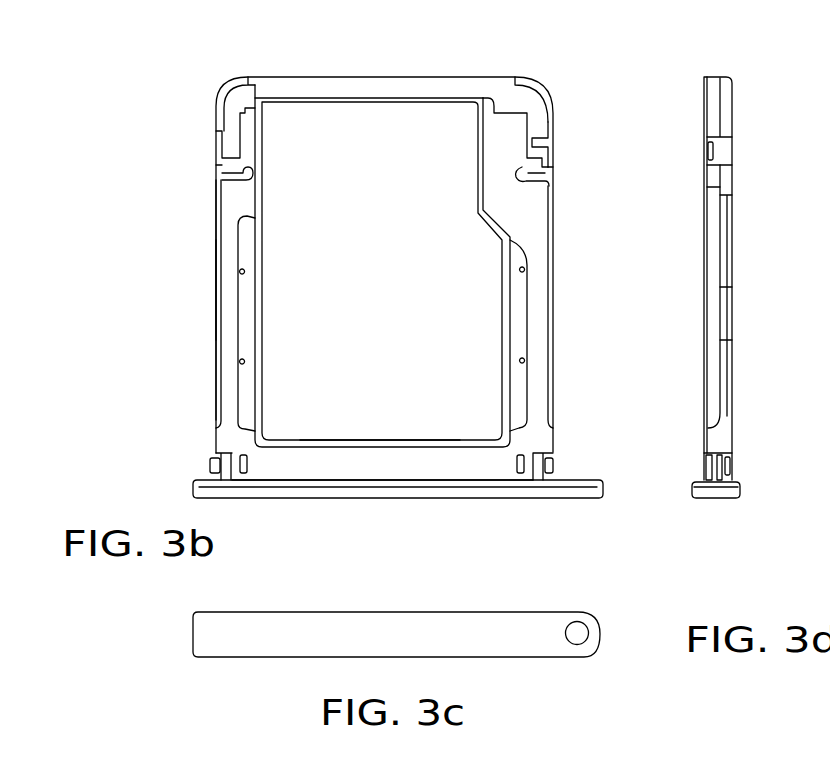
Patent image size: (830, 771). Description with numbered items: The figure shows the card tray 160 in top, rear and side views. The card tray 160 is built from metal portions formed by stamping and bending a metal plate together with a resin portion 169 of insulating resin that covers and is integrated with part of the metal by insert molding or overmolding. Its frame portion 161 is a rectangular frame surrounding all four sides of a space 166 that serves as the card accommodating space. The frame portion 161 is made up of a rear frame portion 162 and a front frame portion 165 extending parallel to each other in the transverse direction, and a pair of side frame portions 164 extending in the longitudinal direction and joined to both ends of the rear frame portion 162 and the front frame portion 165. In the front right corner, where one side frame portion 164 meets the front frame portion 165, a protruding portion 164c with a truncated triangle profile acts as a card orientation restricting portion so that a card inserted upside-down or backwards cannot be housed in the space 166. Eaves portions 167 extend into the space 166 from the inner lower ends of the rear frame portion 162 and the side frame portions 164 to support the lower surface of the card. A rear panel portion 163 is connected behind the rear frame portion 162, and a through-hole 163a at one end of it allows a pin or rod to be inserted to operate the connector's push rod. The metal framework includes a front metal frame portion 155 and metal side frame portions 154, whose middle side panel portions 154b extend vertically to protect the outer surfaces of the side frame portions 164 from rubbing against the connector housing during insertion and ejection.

In FIG. 3b, the card tray 160 is at (515, 74).
In FIG. 3b, the front frame portion 165 is at (291, 78).
In FIG. 3b, the front metal frame portion 155 is at (420, 100).
In FIG. 3b, the metal side frame portions 154 is at (545, 143).
In FIG. 3b, the side frame portions 164 is at (232, 212).
In FIG. 3b, the protruding portion 164c is at (483, 212).
In FIG. 3b, the eaves portions 167 is at (253, 250).
In FIG. 3b, the side panel portions 154b is at (212, 287).
In FIG. 3d, the side panel portions 154b is at (712, 273).
In FIG. 3b, the frame portion 161 is at (214, 455).
In FIG. 3d, the frame portion 161 is at (732, 434).
In FIG. 3b, the resin portion 169 is at (550, 447).
In FIG. 3b, the space 166 is at (353, 420).
In FIG. 3b, the rear frame portion 162 is at (418, 466).
In FIG. 3b, the rear panel portion 163 is at (485, 500).
In FIG. 3c, the rear panel portion 163 is at (407, 636).
In FIG. 3d, the rear panel portion 163 is at (710, 500).
In FIG. 3c, the through-hole 163a is at (577, 628).